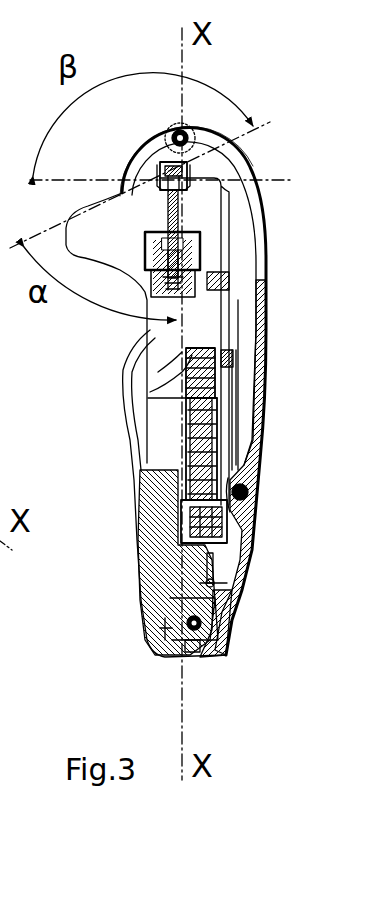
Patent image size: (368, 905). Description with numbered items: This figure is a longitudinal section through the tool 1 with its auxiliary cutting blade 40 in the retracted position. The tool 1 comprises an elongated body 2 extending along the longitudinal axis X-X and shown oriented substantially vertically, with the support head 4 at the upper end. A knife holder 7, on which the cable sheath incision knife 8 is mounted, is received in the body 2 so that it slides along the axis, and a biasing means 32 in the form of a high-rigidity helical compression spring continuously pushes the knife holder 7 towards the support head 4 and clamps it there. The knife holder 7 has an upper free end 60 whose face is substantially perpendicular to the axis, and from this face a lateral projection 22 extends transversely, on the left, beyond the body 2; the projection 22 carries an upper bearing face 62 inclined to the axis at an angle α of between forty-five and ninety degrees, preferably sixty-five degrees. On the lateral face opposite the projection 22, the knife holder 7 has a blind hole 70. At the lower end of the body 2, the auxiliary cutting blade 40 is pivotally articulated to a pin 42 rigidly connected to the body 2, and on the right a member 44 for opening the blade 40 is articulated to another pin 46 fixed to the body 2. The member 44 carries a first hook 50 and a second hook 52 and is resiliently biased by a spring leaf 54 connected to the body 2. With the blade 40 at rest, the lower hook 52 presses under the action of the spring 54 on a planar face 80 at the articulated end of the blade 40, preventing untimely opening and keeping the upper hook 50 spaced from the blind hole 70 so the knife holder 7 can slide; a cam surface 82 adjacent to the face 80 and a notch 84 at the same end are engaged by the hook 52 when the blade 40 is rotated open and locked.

The tool 1 is at (160, 97).
The elongated body 2 is at (118, 488).
The support head 4 is at (215, 115).
The knife holder 7 is at (167, 357).
The cable sheath incision knife 8 is at (180, 215).
The lateral projection 22 is at (130, 253).
The biasing means 32 is at (203, 432).
The auxiliary cutting blade 40 is at (160, 565).
The pin 42 is at (193, 622).
The member for opening the blade 44 is at (262, 445).
The pin 46 is at (247, 493).
The first hook 50 is at (237, 282).
The second hook 52 is at (217, 637).
The spring leaf 54 is at (240, 382).
The upper free end 60 is at (193, 178).
The upper bearing face 62 is at (133, 192).
The blind hole 70 is at (220, 275).
The planar face 80 is at (217, 628).
The cam surface 82 is at (192, 648).
The notch 84 is at (175, 630).